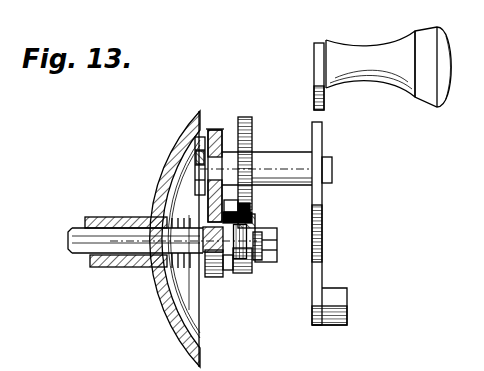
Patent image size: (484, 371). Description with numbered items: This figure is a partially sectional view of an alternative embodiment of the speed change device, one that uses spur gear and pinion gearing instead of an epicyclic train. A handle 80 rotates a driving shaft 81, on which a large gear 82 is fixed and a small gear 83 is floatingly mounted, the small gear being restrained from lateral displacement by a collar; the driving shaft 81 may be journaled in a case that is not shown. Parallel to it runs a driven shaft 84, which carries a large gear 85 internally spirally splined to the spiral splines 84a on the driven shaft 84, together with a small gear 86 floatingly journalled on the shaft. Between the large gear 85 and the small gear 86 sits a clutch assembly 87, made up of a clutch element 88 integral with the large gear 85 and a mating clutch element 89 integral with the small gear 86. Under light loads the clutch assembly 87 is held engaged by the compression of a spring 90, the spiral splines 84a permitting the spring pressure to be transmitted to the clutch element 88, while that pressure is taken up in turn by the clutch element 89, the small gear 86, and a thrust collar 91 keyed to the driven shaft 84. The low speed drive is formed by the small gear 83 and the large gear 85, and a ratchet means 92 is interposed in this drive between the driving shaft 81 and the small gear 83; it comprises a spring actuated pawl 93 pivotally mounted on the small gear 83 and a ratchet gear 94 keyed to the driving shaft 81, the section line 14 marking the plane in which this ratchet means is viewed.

The section line 14- 14 is at (205, 107).
The handle 80 is at (320, 137).
The driving shaft 81 is at (275, 158).
The large gear 82 is at (250, 117).
The small gear 83 is at (213, 130).
The driven shaft 84 is at (85, 253).
The spiral splines 84a is at (255, 222).
The large gear 85 is at (212, 279).
The small gear 86 is at (245, 273).
The clutch assembly 87 is at (236, 283).
The clutch element 88 is at (205, 215).
The clutch element 89 is at (255, 205).
The spring 90 is at (178, 272).
The thrust collar 91 is at (262, 258).
The ratchet means 92 is at (186, 155).
The spring actuated pawl 93 is at (198, 123).
The ratchet gear 94 is at (193, 163).